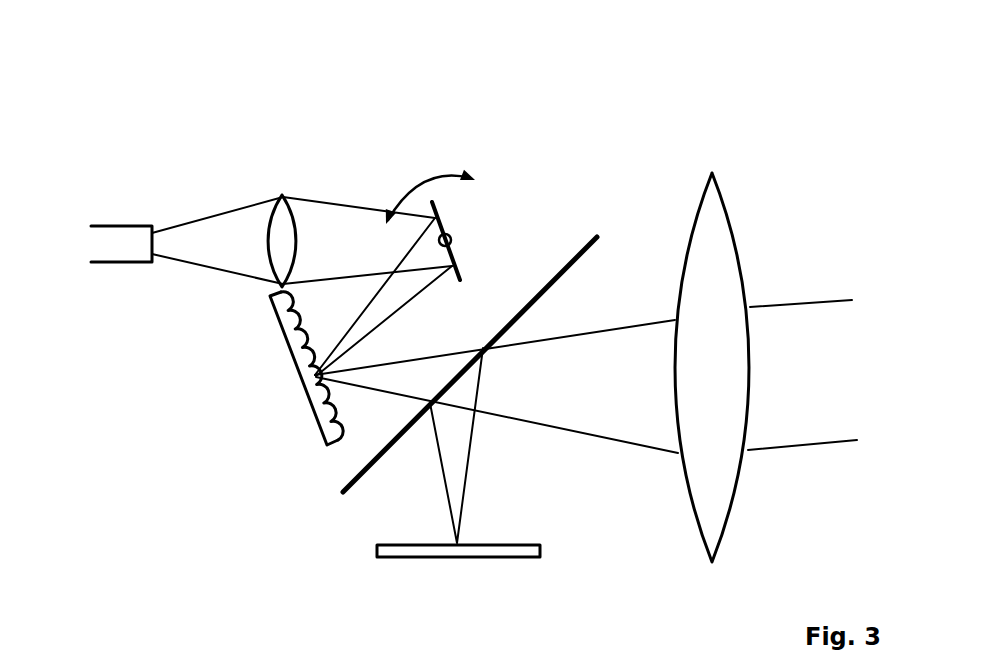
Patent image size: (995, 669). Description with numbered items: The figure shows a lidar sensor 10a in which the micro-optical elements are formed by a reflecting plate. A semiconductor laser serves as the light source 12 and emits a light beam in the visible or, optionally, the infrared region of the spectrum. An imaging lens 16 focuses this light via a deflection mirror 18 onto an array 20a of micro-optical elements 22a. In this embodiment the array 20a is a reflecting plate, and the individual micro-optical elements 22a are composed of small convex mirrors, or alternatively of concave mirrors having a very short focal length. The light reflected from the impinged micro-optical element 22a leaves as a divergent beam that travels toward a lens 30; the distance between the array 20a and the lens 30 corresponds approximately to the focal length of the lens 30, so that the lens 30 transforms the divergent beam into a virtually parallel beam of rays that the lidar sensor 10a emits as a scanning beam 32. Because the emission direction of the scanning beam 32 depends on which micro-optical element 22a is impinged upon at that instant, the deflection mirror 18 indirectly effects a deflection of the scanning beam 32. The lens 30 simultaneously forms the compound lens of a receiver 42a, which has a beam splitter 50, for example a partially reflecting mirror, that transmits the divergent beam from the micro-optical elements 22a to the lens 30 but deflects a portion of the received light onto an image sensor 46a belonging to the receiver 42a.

The lidar sensor 10a is at (478, 120).
The light source 12 is at (119, 226).
The imaging lens 16 is at (282, 195).
The deflection mirror 18 is at (437, 207).
The array 20a is at (298, 420).
The micro-optical elements 22a is at (292, 324).
The lens 30 is at (722, 195).
The scanning beam 32 is at (838, 440).
The receiver 42a is at (343, 535).
The image sensor 46a is at (540, 551).
The beam splitter 50 is at (578, 244).